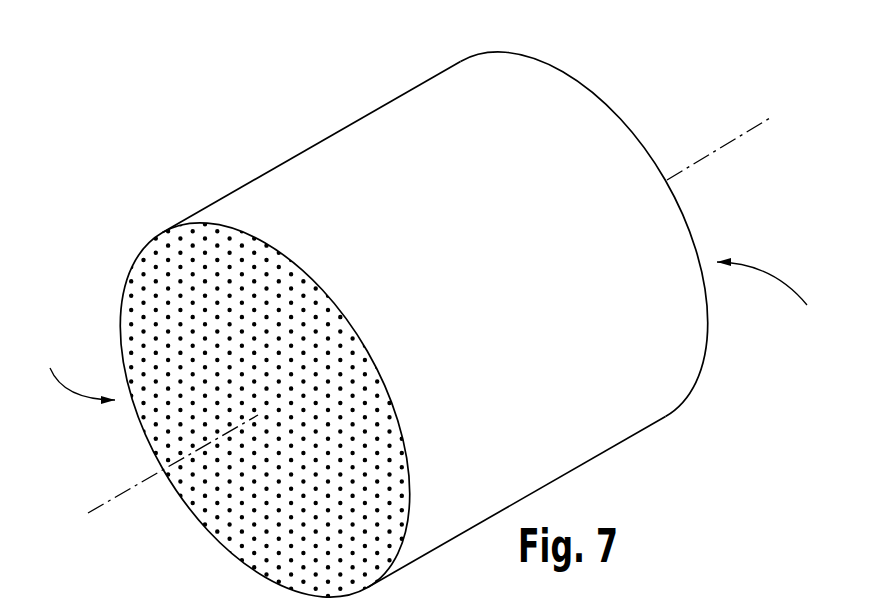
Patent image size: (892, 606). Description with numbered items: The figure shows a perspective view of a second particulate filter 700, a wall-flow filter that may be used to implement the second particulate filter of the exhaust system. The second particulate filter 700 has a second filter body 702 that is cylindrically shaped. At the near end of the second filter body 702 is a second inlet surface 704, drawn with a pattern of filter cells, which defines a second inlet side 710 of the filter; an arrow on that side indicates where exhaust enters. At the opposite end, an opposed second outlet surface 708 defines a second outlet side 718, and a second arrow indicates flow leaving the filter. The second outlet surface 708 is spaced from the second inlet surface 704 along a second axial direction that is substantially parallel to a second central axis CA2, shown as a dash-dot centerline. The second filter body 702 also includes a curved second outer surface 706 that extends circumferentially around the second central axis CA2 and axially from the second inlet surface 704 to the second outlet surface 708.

The second particulate filter 700 is at (242, 137).
The second filter body 702 is at (323, 167).
The second inlet surface 704 is at (157, 258).
The second outer surface 706 is at (392, 102).
The second outlet surface 708 is at (562, 70).
The second inlet side 710 is at (68, 372).
The second outlet side 718 is at (771, 298).
The second central axis CA2 is at (405, 335).